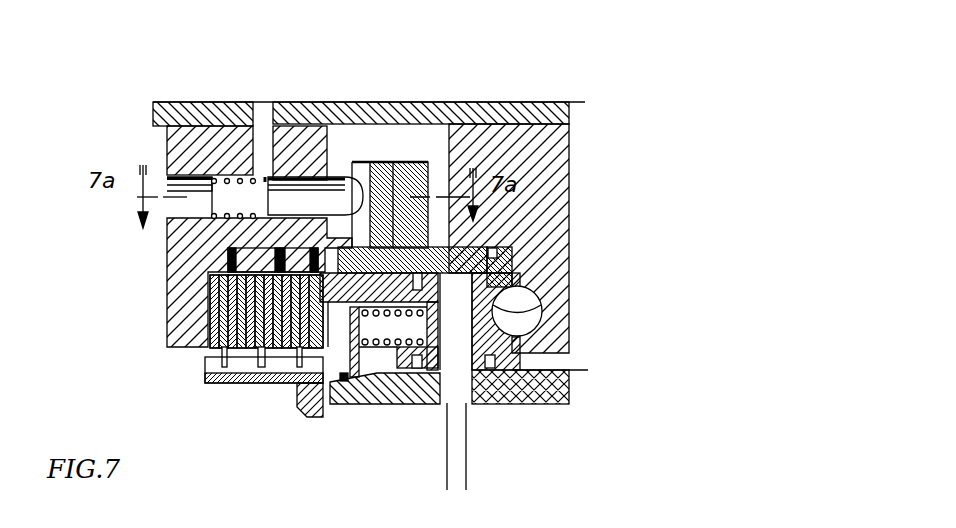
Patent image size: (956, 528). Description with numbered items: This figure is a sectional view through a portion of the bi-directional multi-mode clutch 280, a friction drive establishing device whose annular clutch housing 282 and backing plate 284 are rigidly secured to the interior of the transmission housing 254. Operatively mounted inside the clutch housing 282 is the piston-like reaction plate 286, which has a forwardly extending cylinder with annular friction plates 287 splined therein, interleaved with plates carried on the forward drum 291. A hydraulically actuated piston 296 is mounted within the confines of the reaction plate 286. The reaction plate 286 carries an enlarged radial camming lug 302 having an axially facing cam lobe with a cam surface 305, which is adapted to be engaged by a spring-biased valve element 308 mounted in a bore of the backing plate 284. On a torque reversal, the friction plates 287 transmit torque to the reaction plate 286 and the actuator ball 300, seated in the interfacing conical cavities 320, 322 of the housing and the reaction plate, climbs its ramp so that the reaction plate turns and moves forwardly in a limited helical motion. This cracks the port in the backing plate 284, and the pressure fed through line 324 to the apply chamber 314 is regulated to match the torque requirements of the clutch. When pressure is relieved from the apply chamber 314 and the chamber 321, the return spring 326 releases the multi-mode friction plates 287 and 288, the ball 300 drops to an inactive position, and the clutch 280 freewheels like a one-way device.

The multi-mode clutch 280 is at (614, 88).
The transmission housing 254 is at (202, 106).
The backing plate 284 is at (167, 312).
The radial camming lug 302 is at (398, 163).
The cam surface 305 is at (357, 165).
The valve element 308 is at (305, 195).
The clutch housing 282 is at (535, 165).
The piston 296 is at (490, 256).
The chamber 321 is at (515, 245).
The actuator ball 300 is at (527, 312).
The conical cavity 320 is at (548, 326).
The reaction plate 286 is at (482, 272).
The conical cavity 322 is at (512, 340).
The line 324 is at (455, 428).
The return spring 326 is at (385, 345).
The apply chamber 314 is at (522, 405).
The friction plates 287 is at (237, 340).
The friction plates 288 is at (220, 385).
The forward drum 291 is at (307, 418).